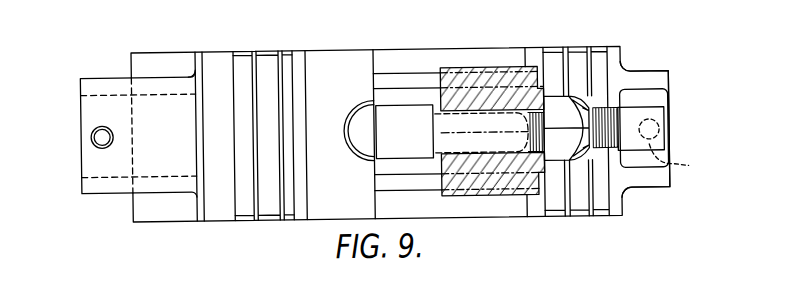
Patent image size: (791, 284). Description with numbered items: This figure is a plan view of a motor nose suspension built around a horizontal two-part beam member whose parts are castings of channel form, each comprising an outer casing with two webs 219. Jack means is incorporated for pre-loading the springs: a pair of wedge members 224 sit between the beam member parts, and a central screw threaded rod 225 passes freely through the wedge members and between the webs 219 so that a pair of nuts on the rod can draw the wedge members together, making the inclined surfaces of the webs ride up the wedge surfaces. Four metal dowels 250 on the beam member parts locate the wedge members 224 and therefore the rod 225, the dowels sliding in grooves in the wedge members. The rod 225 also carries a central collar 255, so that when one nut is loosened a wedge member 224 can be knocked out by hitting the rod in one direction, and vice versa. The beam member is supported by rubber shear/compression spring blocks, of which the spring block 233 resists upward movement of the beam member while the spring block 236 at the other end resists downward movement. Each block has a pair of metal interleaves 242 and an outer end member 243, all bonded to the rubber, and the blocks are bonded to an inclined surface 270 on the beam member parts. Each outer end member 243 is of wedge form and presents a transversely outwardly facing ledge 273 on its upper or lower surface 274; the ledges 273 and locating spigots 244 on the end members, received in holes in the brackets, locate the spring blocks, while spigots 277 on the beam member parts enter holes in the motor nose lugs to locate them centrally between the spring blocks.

The web 219 is at (385, 196).
The wedge member 224 is at (470, 200).
The screw threaded rod 225 is at (663, 118).
The rubber shear/compression spring block 233 is at (237, 191).
The rubber shear/compression spring block 236 is at (578, 100).
The metal interleaf 242 is at (587, 76).
The outer end member 243 is at (651, 88).
The locating spigot 244 is at (100, 143).
The metal dowel 250 is at (507, 90).
The central collar 255 is at (412, 114).
The inclined surface 270 is at (302, 205).
The ledge 273 is at (192, 78).
The upper (or lower) surface 274 is at (81, 126).
The spigot 277 is at (362, 118).